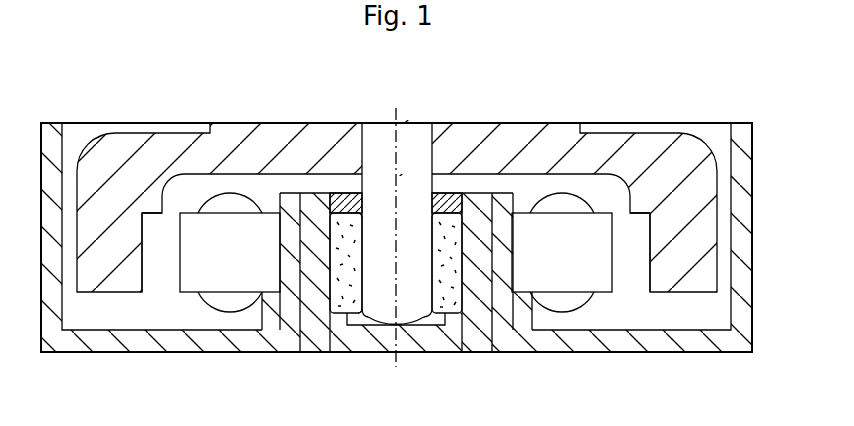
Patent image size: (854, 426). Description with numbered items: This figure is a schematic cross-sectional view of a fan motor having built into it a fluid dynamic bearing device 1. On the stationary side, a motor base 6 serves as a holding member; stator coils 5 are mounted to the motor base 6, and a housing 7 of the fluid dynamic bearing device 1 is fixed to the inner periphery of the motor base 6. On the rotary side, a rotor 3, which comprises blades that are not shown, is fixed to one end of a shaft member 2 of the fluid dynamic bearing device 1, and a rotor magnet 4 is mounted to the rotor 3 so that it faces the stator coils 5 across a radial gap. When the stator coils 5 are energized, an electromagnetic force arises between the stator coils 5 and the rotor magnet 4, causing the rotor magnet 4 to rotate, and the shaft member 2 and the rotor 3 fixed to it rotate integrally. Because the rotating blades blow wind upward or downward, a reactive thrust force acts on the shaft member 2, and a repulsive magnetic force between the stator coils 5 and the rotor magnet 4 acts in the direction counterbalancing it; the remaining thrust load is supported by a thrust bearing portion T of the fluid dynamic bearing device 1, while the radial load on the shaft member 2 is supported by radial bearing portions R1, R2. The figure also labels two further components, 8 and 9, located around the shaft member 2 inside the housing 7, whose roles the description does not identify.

The fluid dynamic bearing device 1 is at (472, 188).
The shaft member 2 is at (414, 122).
The rotor 3 is at (640, 150).
The rotor magnet 4 is at (642, 280).
The stator coils 5 is at (598, 284).
The motor base 6 is at (518, 335).
The housing 7 is at (430, 343).
The bearing 8 is at (447, 297).
The washer 9 is at (342, 197).
The radial bearing portion R1 is at (360, 237).
The radial bearing portion R2 is at (358, 292).
The thrust bearing portion T is at (395, 325).